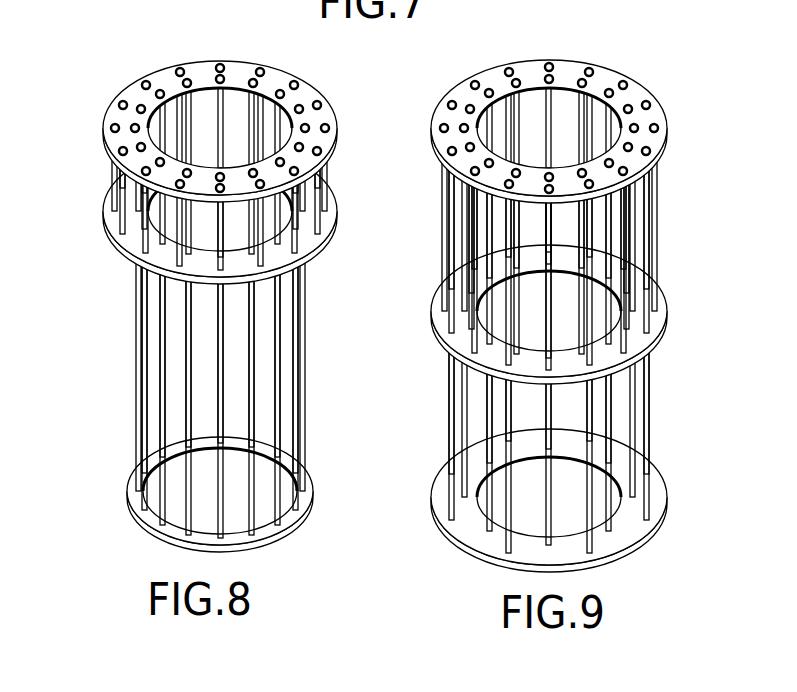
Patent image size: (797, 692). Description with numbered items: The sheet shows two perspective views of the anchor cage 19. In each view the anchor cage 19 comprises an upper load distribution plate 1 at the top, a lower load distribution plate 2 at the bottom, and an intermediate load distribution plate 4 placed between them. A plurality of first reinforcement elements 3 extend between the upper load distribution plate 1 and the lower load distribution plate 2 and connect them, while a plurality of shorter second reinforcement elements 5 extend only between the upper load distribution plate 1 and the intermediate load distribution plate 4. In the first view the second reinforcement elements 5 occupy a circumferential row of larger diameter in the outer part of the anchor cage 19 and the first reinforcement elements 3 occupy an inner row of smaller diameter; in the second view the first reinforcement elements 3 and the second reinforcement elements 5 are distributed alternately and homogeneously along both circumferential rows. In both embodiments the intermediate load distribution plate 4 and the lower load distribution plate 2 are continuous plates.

In FIG. 8, the upper load distribution plate 1 is at (165, 68).
In FIG. 9, the upper load distribution plate 1 is at (560, 63).
In FIG. 8, the lower load distribution plate 2 is at (312, 502).
In FIG. 9, the lower load distribution plate 2 is at (657, 500).
In FIG. 8, the first reinforcement elements 3 is at (212, 273).
In FIG. 9, the first reinforcement elements 3 is at (551, 276).
In FIG. 8, the intermediate load distribution plate 4 is at (320, 246).
In FIG. 9, the intermediate load distribution plate 4 is at (655, 322).
In FIG. 8, the second reinforcement elements 5 is at (128, 100).
In FIG. 9, the second reinforcement elements 5 is at (519, 78).
In FIG. 8, the anchor cage 19 is at (212, 280).
In FIG. 9, the anchor cage 19 is at (558, 286).